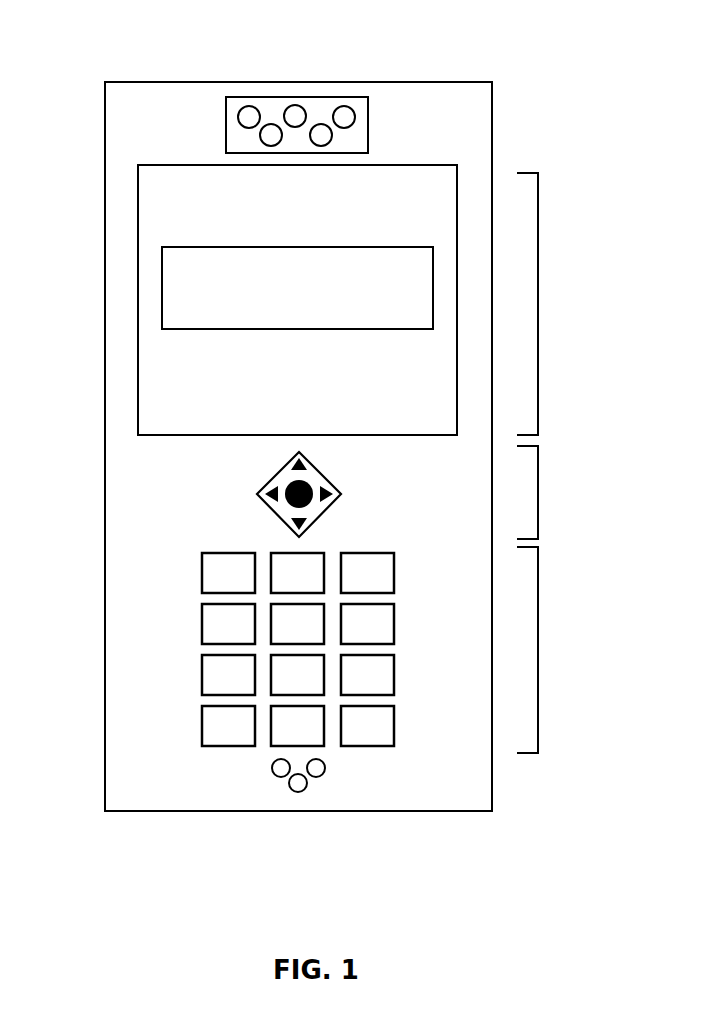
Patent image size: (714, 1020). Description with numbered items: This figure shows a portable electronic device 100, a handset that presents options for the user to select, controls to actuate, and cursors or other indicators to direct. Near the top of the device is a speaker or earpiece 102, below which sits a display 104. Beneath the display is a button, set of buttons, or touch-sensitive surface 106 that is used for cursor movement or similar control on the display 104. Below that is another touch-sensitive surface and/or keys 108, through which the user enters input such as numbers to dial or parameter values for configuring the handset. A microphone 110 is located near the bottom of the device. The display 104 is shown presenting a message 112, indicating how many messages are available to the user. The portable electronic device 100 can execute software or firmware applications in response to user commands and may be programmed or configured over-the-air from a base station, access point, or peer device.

The portable electronic device 100 is at (120, 82).
The speaker or earpiece 102 is at (328, 97).
The display 104 is at (538, 298).
The touch-sensitive surface 106 is at (538, 491).
The keys 108 is at (538, 637).
The microphone 110 is at (298, 792).
The message 112 is at (162, 288).